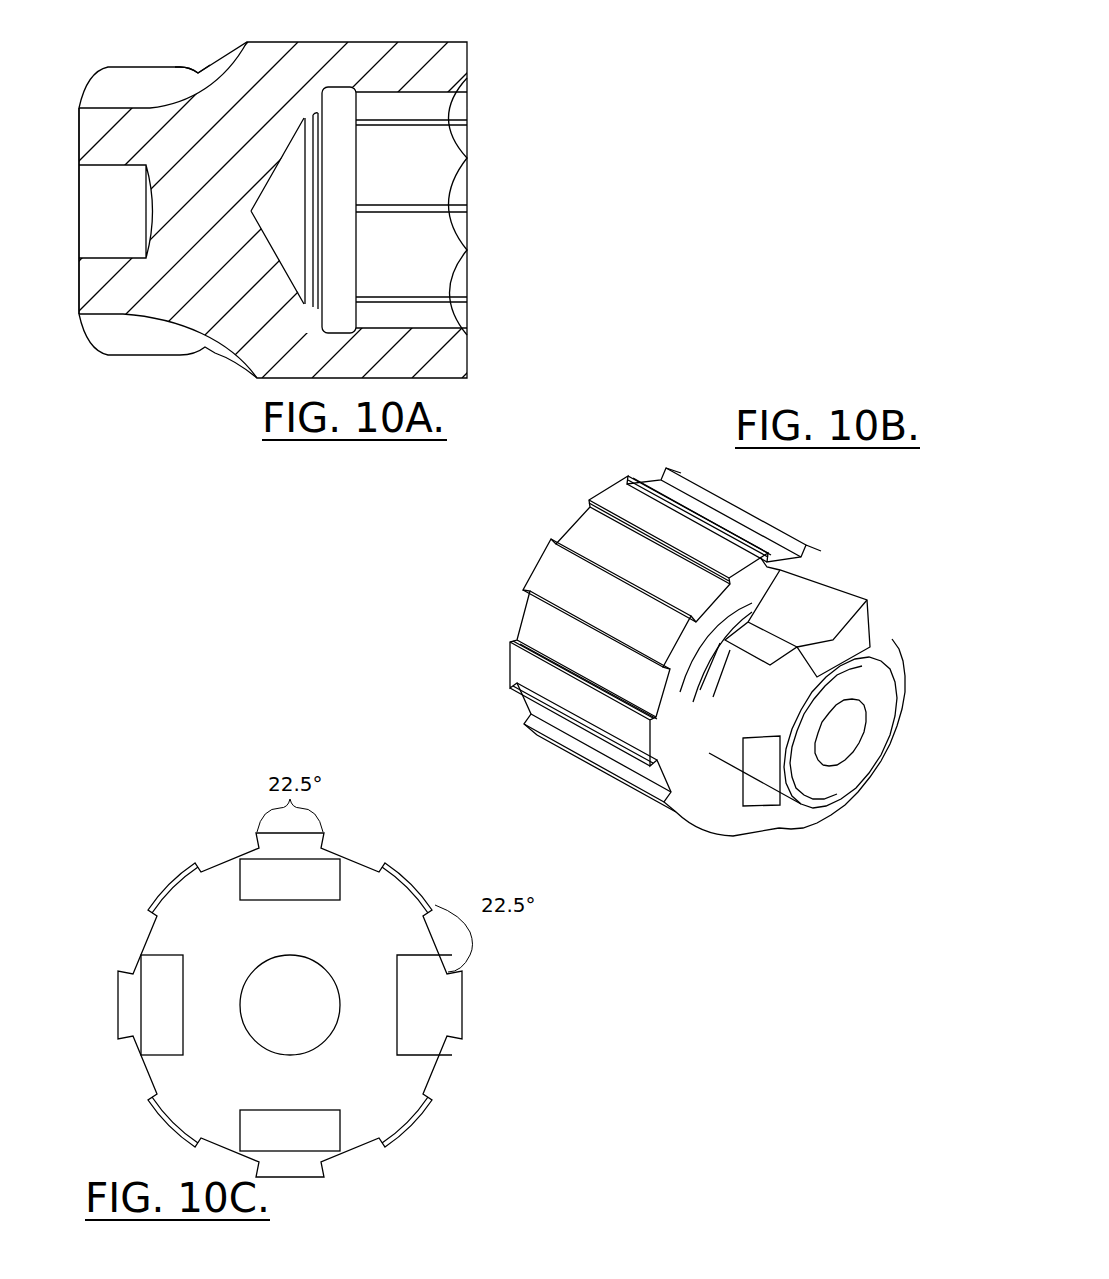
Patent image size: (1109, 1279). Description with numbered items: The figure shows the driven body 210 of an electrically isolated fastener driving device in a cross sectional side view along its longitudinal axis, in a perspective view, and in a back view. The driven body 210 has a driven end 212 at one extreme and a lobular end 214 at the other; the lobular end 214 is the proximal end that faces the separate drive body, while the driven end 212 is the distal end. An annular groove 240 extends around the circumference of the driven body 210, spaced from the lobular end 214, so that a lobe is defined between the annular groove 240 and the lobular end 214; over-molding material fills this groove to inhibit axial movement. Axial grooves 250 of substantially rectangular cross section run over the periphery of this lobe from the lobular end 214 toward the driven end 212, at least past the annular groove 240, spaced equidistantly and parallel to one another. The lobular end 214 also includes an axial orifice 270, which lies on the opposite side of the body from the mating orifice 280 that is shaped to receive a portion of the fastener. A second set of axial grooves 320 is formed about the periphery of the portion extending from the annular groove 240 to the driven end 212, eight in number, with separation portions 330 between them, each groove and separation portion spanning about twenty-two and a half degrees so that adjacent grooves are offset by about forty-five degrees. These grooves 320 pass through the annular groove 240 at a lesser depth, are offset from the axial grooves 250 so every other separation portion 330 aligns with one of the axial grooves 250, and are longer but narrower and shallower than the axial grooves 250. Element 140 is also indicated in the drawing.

In FIG. 10C, the rib 140 is at (415, 1118).
In FIG. 10B, the driven body 210 is at (575, 750).
In FIG. 10A, the driven end 212 is at (467, 327).
In FIG. 10B, the driven end 212 is at (545, 563).
In FIG. 10A, the lobular end 214 is at (79, 107).
In FIG. 10B, the lobular end 214 is at (807, 782).
In FIG. 10A, the annular groove 240 is at (200, 71).
In FIG. 10B, the annular groove 240 is at (727, 626).
In FIG. 10A, the axial grooves 250 is at (193, 92).
In FIG. 10B, the axial grooves 250 is at (792, 612).
In FIG. 10C, the axial grooves 250 is at (270, 875).
In FIG. 10A, the axial orifice 270 is at (130, 207).
In FIG. 10B, the axial orifice 270 is at (833, 745).
In FIG. 10C, the axial orifice 270 is at (268, 978).
In FIG. 10A, the mating orifice 280 is at (392, 250).
In FIG. 10B, the second set of axial grooves 320 is at (600, 533).
In FIG. 10C, the second set of axial grooves 320 is at (355, 848).
In FIG. 10B, the separation portions 330 is at (633, 503).
In FIG. 10C, the separation portions 330 is at (125, 988).